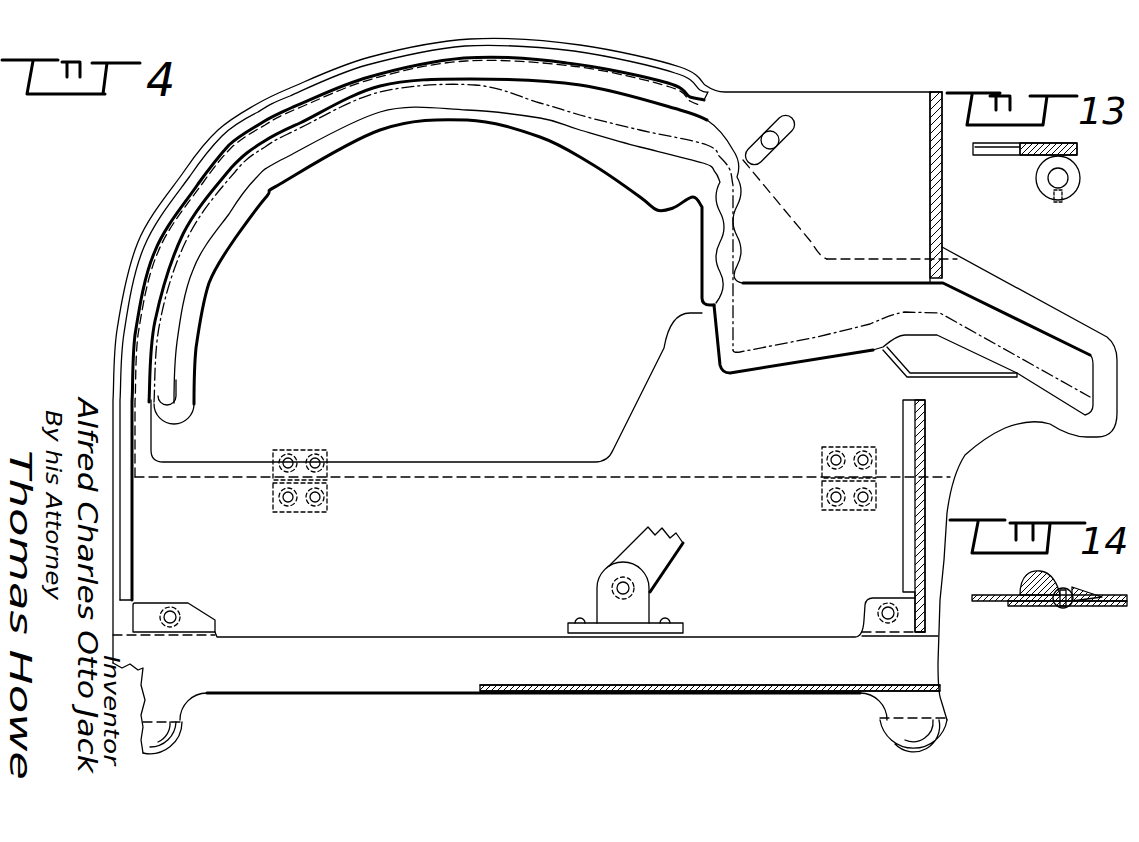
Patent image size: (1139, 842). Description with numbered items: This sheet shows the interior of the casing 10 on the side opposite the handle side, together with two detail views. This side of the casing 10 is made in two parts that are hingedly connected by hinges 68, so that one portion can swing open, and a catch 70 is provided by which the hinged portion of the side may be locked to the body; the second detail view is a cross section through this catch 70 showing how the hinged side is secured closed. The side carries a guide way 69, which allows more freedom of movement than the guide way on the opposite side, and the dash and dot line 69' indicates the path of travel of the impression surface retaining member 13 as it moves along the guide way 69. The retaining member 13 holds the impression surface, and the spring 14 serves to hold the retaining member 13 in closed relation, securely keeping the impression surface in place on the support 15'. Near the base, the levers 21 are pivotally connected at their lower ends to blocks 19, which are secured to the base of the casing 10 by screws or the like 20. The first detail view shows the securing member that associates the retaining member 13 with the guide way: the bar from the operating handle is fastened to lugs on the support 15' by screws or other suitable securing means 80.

In FIG. 4, the spring 14 is at (742, 176).
In FIG. 4, the catch 70 is at (793, 131).
In FIG. 14, the catch 70 is at (1027, 578).
In FIG. 4, the guide way 69 is at (772, 339).
In FIG. 4, the dash and dot line 69' is at (911, 354).
In FIG. 4, the hinges 68 is at (320, 512).
In FIG. 4, the blocks 19 is at (600, 600).
In FIG. 4, the screws 20 is at (577, 621).
In FIG. 4, the levers 21 is at (668, 568).
In FIG. 13, the retaining member 13 is at (1075, 146).
In FIG. 13, the support 15' is at (1070, 152).
In FIG. 13, the securing means 80 is at (1066, 195).
In FIG. 14, the casing 10 is at (1098, 604).